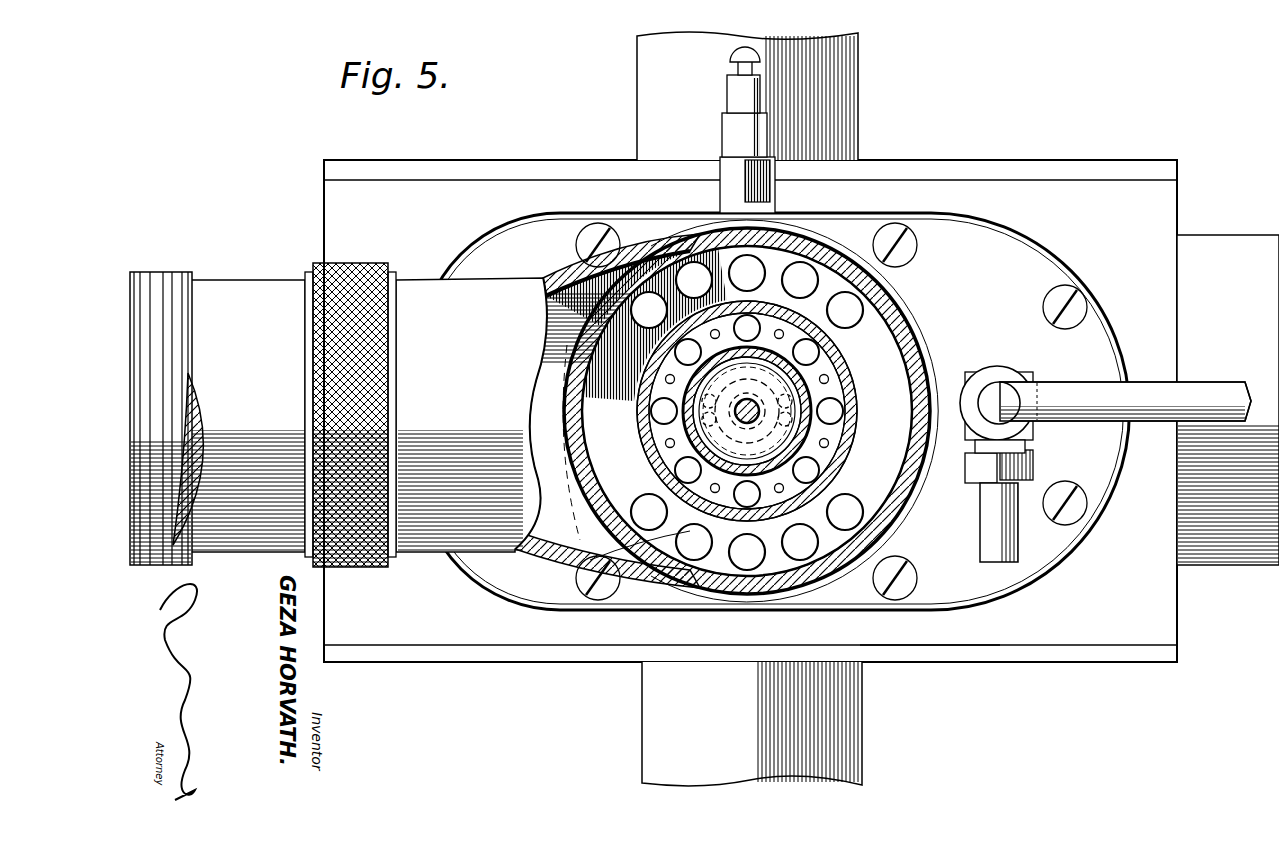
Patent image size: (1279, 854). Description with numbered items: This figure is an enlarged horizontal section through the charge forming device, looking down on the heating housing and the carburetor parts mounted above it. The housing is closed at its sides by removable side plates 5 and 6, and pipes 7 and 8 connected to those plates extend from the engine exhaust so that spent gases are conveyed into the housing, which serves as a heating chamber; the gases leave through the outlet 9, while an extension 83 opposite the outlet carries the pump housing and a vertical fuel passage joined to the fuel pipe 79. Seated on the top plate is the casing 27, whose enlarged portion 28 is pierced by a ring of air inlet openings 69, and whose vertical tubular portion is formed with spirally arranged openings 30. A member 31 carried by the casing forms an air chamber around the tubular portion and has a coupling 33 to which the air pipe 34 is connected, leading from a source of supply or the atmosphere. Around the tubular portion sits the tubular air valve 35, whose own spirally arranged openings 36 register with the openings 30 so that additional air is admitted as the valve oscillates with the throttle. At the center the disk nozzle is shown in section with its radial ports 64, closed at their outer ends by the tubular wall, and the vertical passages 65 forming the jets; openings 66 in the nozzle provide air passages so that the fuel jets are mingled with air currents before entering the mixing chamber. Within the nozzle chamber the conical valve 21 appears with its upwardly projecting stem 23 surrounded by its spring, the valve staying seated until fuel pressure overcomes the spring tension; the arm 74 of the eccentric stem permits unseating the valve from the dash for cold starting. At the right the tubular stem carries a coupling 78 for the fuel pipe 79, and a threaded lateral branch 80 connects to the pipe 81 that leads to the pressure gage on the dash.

The removable side plate 5 is at (937, 648).
The removable side plate 6 is at (935, 165).
The pipe 7 is at (752, 724).
The pipe 8 is at (838, 110).
The outlet 9 is at (196, 556).
The conical valve 21 is at (716, 433).
The upwardly projecting stem 23 is at (760, 408).
The casing 27 is at (486, 573).
The enlarged portion 28 is at (886, 360).
The spirally arranged openings 30 is at (836, 414).
The member 31 is at (471, 415).
The coupling 33 is at (360, 272).
The air pipe 34 is at (236, 416).
The tubular air valve 35 is at (638, 458).
The spirally arranged openings 36 is at (672, 481).
The radial ports 64 is at (790, 333).
The vertical passages 65 is at (782, 338).
The openings 66 is at (812, 468).
The air inlet openings 69 is at (650, 258).
The arm 74 is at (734, 146).
The coupling 78 is at (1003, 378).
The fuel pipe 79 is at (1057, 395).
The threaded lateral branch 80 is at (968, 468).
The pipe 81 is at (984, 540).
The extension 83 is at (1228, 400).